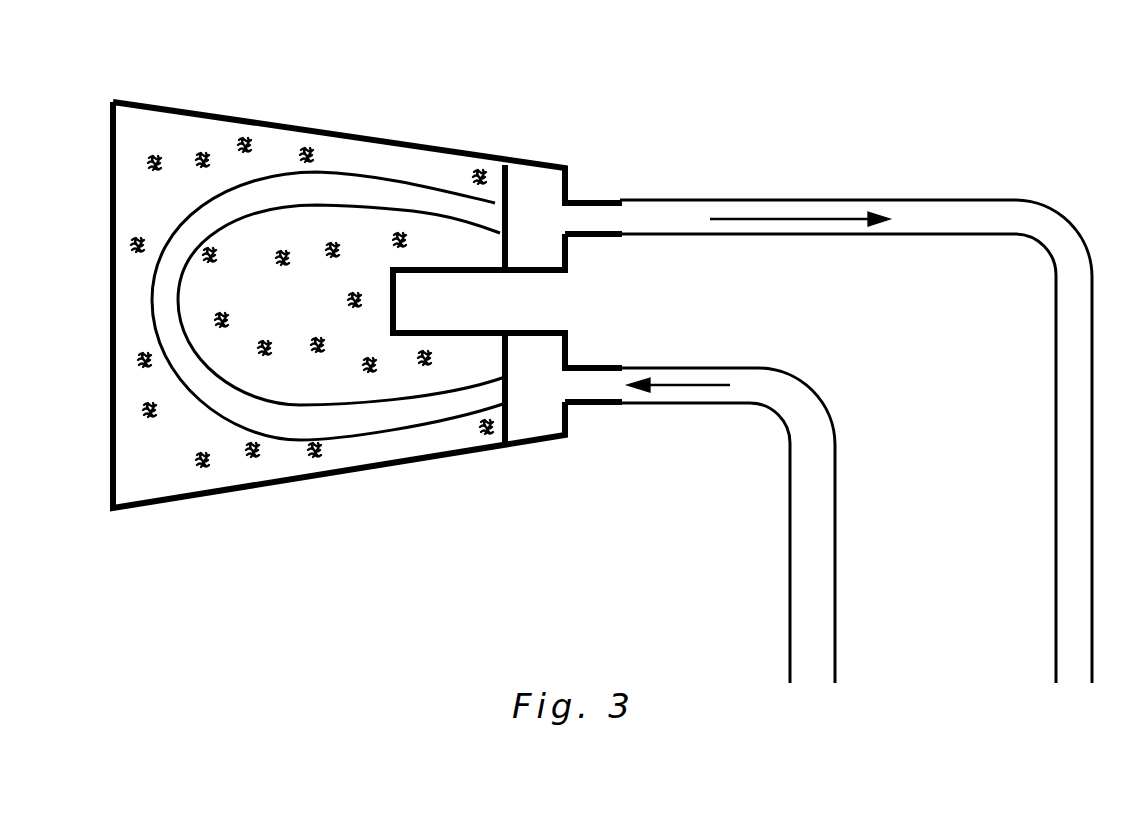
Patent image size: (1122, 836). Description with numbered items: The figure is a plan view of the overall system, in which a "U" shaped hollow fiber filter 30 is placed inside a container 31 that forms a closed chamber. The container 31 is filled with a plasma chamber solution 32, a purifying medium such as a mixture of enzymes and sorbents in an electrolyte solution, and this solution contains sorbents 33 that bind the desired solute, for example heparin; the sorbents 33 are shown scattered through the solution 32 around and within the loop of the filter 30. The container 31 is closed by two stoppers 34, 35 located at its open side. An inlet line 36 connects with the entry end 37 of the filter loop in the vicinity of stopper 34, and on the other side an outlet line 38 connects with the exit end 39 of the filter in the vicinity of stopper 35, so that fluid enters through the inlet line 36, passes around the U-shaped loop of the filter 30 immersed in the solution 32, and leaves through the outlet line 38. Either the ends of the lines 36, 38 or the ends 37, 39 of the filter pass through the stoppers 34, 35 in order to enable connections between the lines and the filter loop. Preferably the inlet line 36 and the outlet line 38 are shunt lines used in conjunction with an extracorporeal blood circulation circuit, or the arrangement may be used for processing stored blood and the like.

The "U" shaped filter 30 is at (186, 236).
The container 31 is at (313, 134).
The plasma chamber solution 32 is at (172, 135).
The sorbents 33 is at (245, 140).
The stopper 34 is at (540, 420).
The stopper 35 is at (536, 185).
The inlet line 36 is at (790, 550).
The entry end 37 is at (499, 415).
The outlet line 38 is at (920, 200).
The exit end 39 is at (493, 192).